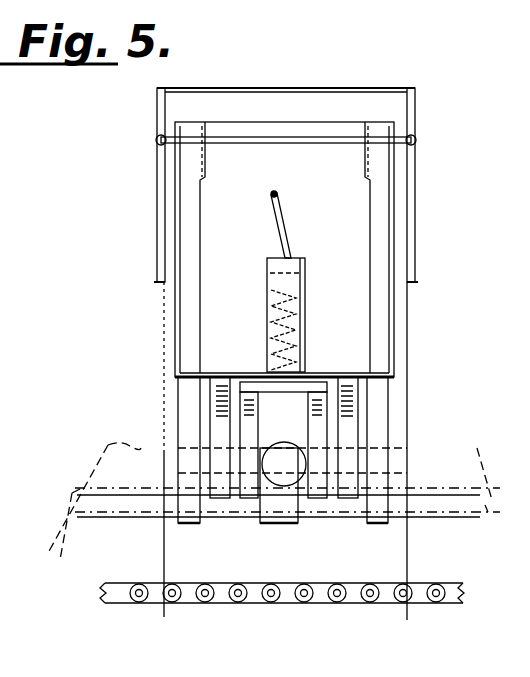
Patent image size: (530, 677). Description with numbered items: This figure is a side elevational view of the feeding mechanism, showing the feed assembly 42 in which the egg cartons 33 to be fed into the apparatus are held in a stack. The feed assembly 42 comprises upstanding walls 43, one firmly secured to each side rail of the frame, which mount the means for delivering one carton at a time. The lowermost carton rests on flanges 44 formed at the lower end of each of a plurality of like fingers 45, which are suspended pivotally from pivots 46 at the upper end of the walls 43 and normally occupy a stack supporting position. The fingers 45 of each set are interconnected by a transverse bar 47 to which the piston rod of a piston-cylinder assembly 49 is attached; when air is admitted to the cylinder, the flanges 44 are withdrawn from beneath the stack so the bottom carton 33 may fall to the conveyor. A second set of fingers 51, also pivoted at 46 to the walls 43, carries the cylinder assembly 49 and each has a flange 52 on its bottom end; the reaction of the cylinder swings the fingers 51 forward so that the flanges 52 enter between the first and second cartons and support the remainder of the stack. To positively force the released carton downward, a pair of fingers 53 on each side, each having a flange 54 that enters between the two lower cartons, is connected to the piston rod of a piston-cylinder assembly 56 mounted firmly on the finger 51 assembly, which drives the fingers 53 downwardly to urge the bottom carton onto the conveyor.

The egg carton 33 is at (263, 512).
The feed assembly 42 is at (446, 164).
The upstanding walls 43 is at (158, 213).
The flanges 44 is at (190, 523).
The fingers 45 is at (190, 417).
The pivots 46 is at (416, 136).
The transverse bar 47 is at (268, 447).
The piston-cylinder assembly 49 is at (286, 442).
The second set of fingers 51 is at (193, 208).
The flange 52 is at (345, 500).
The fingers 53 is at (253, 455).
The flange 54 is at (318, 500).
The piston-cylinder assembly 56 is at (303, 268).